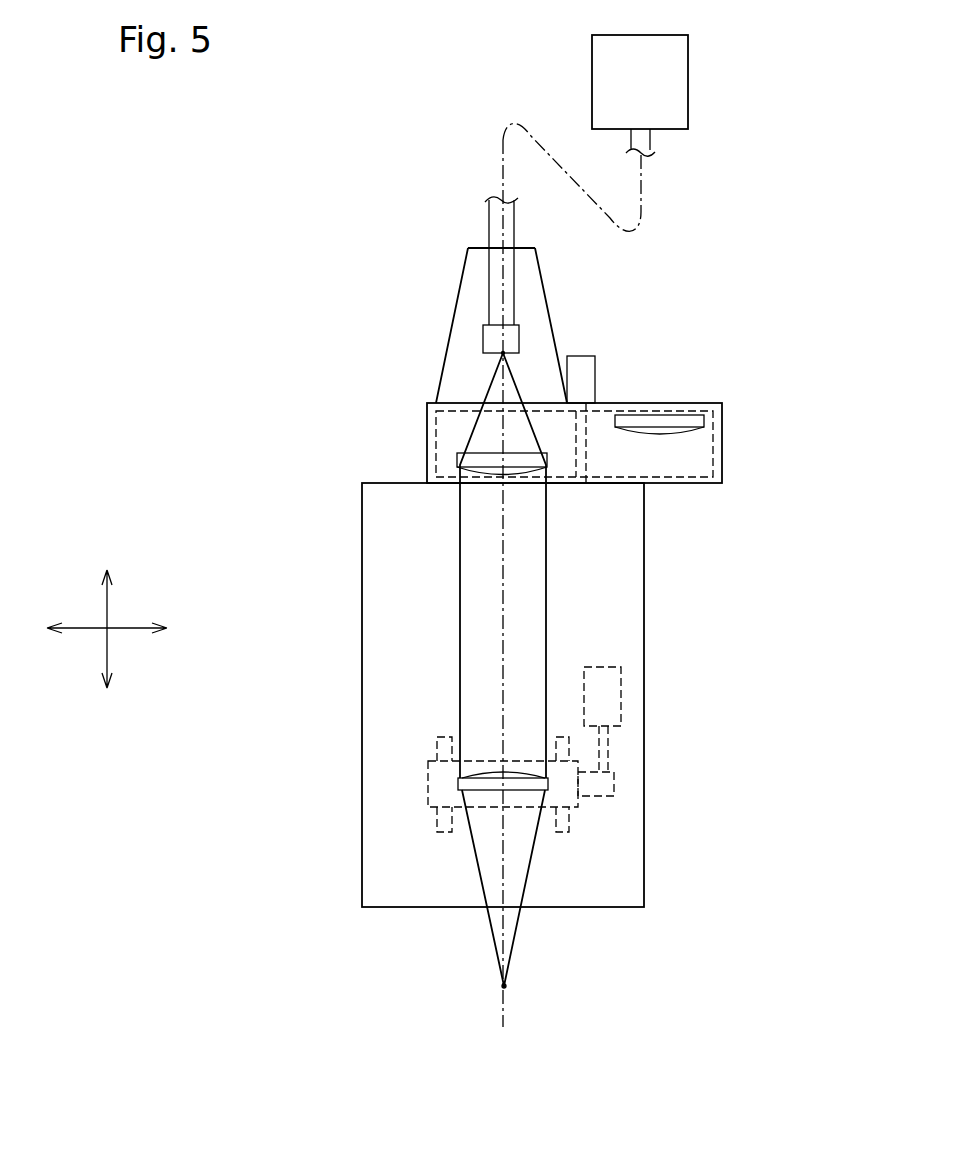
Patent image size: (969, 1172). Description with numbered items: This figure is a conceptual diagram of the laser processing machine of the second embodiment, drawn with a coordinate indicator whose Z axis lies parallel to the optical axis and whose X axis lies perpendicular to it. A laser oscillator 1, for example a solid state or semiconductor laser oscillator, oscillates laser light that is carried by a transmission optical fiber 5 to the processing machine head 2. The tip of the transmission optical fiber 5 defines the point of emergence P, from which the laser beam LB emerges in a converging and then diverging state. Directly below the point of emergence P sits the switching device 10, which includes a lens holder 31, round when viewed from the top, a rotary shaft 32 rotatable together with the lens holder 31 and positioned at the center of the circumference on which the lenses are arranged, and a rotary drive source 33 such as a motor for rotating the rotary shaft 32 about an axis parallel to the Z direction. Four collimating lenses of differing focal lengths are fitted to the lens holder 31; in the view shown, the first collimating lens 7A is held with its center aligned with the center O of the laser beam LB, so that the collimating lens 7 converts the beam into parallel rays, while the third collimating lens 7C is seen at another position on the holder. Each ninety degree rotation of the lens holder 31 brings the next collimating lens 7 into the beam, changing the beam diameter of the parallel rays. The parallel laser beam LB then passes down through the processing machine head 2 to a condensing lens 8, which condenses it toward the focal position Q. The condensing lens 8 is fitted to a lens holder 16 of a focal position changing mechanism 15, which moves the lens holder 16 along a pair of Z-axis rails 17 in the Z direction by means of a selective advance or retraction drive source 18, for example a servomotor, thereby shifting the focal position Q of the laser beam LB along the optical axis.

The laser oscillator 1 is at (592, 78).
The transmission optical fiber 5 is at (488, 223).
The switching device 10 is at (566, 406).
The lens holder 31 is at (713, 447).
The rotary shaft 32 is at (587, 430).
The rotary drive source 33 is at (595, 367).
The collimating lens 7 is at (566, 415).
The first collimating lens 7A is at (458, 463).
The third collimating lens 7C is at (697, 413).
The processing machine head 2 is at (342, 601).
The condensing lens 8 is at (458, 786).
The focal position changing mechanism 15 is at (656, 731).
The lens holder 16 is at (548, 832).
The Z-axis rails 17 is at (437, 822).
The selective advance or retraction drive source 18 is at (618, 745).
The point of emergence P is at (500, 353).
The center O is at (500, 553).
The focal position Q is at (504, 986).
The laser beam LB is at (460, 682).
The X-axis X is at (98, 629).
The Z-axis Z is at (108, 611).